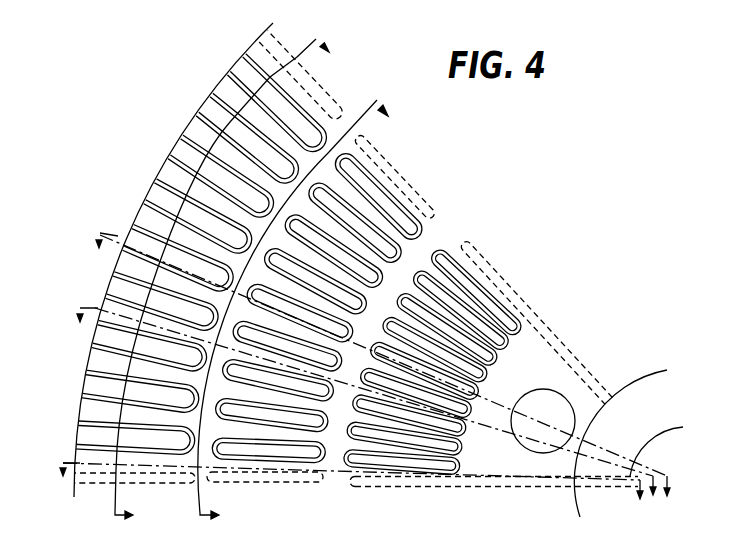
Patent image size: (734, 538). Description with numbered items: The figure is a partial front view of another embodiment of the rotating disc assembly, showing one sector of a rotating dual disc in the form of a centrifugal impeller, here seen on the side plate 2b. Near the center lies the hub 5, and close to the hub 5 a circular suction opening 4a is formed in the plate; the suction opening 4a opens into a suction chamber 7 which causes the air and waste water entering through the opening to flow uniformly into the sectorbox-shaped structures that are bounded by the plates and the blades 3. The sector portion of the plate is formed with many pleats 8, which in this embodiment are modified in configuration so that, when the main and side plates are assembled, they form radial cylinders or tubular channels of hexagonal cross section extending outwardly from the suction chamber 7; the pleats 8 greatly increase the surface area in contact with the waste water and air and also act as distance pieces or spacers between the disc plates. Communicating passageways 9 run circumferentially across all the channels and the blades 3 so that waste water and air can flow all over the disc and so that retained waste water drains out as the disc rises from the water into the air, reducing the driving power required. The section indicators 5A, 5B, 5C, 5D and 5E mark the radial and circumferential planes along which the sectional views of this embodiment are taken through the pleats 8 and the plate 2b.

The side plate 2b is at (529, 357).
The blade 3 is at (320, 93).
The suction opening 4a is at (552, 405).
The hub 5 is at (642, 393).
The suction chamber 7 is at (500, 457).
The pleat 8 is at (237, 70).
The communicating passageway 9 is at (357, 148).
The section line 5A is at (393, 349).
The section line 5B is at (372, 399).
The section line 5C is at (344, 480).
The section line 5D is at (236, 281).
The section line 5E is at (302, 315).